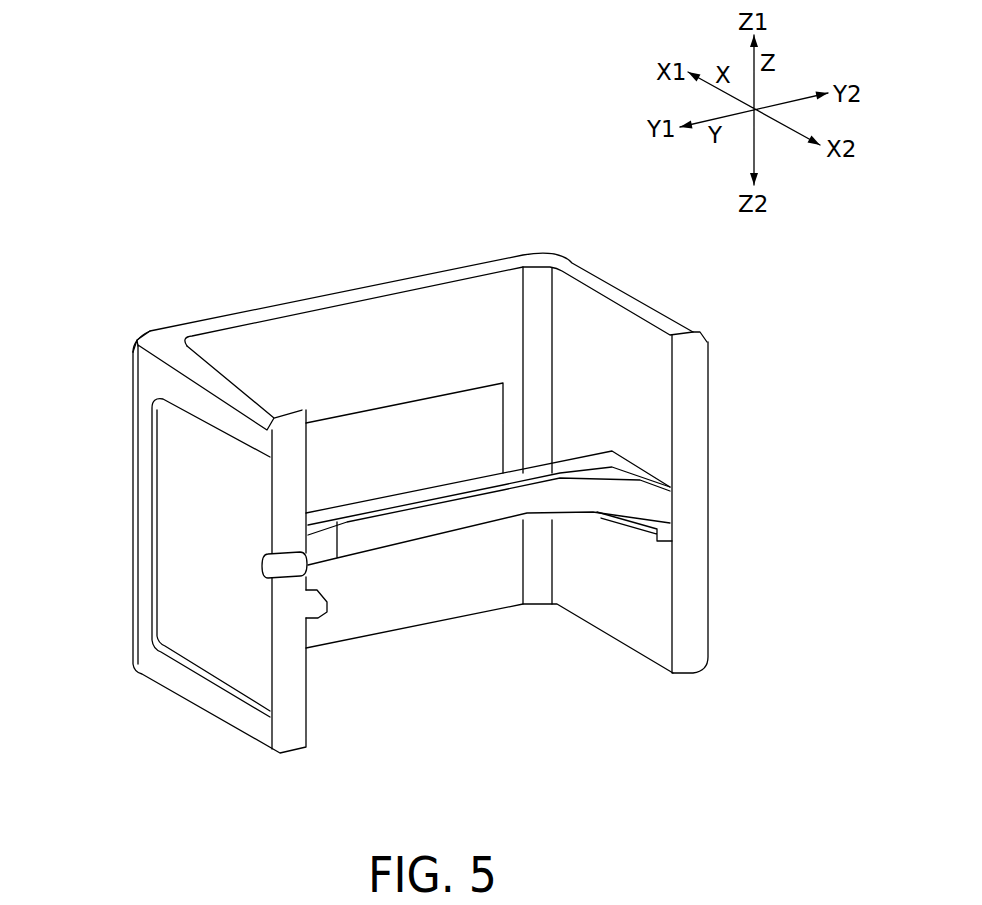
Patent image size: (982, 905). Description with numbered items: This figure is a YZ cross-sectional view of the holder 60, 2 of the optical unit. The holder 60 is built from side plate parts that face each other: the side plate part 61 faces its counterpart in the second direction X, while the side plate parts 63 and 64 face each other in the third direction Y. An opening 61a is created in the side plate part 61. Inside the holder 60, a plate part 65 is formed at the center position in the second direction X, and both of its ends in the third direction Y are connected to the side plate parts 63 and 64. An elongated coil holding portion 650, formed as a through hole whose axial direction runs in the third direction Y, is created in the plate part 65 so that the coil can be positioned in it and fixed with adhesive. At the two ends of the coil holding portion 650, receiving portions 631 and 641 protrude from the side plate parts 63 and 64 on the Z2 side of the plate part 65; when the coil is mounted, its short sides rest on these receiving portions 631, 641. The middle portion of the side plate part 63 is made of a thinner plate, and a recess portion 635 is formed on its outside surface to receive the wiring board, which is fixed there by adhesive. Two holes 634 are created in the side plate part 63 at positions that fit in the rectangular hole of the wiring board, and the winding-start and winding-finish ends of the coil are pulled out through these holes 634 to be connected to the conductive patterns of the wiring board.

The holder 60 is at (588, 267).
The holder 2 is at (429, 487).
The side plate part 61 is at (447, 307).
The opening 61a is at (383, 420).
The side plate part 63 is at (150, 682).
The receiving portion 631 is at (313, 617).
The holes 634 is at (265, 567).
The recess portion 635 is at (227, 677).
The side plate part 64 is at (697, 478).
The receiving portion 641 is at (662, 545).
The plate part 65 is at (615, 465).
The coil holding portion 650 is at (487, 518).